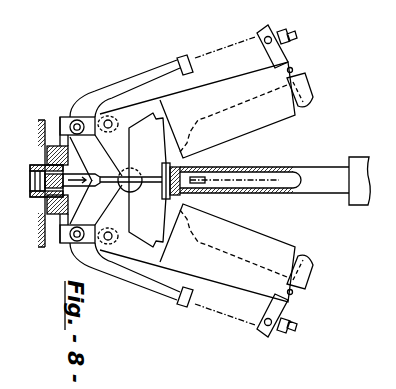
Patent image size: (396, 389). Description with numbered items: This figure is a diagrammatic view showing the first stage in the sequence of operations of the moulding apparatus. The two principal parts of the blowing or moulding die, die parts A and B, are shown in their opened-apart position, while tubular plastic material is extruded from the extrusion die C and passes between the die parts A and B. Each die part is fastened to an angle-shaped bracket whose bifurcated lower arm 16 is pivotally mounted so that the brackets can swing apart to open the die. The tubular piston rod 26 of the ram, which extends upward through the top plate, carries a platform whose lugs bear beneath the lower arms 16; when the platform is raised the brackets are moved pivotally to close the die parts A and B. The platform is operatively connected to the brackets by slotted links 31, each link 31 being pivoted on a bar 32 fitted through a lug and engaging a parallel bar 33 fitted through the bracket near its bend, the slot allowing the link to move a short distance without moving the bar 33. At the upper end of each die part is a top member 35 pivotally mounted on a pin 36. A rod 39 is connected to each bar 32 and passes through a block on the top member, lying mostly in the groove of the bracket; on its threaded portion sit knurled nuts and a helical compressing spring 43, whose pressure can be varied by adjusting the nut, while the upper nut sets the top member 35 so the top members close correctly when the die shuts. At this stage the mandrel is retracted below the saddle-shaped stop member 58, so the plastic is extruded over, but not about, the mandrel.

The lower arm 16 is at (106, 196).
The tubular piston rod 26 is at (43, 201).
The slotted link 31 is at (101, 142).
The bar 32 is at (76, 120).
The parallel bar 33 is at (109, 263).
The top member 35 is at (313, 89).
The pin 36 is at (297, 68).
The rod 39 is at (110, 87).
The helical compressing spring 43 is at (222, 308).
The stop member 58 is at (147, 180).
The die part A is at (197, 110).
The die part B is at (197, 253).
The extrusion die C is at (353, 206).